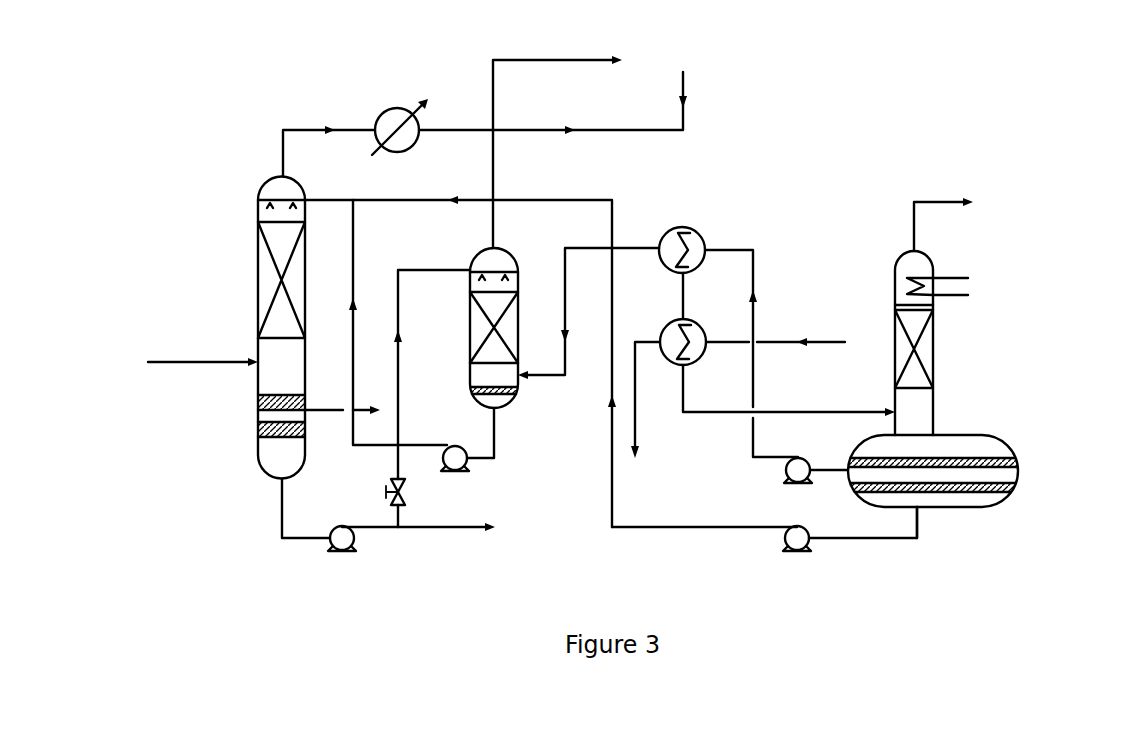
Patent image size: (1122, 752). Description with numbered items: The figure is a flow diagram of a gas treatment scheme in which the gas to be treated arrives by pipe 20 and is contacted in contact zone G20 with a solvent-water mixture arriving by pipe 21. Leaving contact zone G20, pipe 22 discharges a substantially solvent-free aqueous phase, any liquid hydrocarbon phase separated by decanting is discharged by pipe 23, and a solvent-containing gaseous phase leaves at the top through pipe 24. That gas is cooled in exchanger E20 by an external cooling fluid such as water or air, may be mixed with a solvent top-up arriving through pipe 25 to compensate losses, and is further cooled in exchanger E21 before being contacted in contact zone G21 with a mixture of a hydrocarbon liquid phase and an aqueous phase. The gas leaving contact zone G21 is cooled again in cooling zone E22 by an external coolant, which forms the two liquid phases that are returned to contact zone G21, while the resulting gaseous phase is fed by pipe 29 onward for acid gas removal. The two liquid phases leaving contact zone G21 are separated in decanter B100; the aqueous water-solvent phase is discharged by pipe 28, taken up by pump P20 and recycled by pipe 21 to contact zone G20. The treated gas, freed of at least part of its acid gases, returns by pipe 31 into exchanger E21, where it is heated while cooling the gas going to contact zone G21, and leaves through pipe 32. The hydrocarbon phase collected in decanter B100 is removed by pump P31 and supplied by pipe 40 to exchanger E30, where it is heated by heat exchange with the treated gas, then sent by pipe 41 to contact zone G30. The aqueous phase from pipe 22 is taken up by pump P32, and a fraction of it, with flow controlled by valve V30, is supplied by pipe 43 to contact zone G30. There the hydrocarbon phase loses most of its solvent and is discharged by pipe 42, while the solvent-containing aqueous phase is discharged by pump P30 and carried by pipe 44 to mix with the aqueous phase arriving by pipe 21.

The pipe 20 is at (200, 361).
The pipe 21 is at (398, 200).
The pipe 22 is at (282, 527).
The pipe 23 is at (328, 410).
The pipe 24 is at (302, 127).
The pipe 25 is at (688, 110).
The pipe 28 is at (942, 508).
The pipe 29 is at (945, 200).
The pipe 31 is at (787, 341).
The pipe 32 is at (638, 436).
The pipe 40 is at (757, 264).
The pipe 41 is at (575, 248).
The pipe 42 is at (545, 60).
The pipe 43 is at (428, 270).
The pipe 44 is at (353, 330).
The exchanger E20 is at (395, 108).
The exchanger E21 is at (676, 333).
The cooling zone E22 is at (895, 310).
The exchanger E30 is at (698, 240).
The contact zone G20 is at (258, 248).
The contact zone G21 is at (933, 342).
The contact zone G30 is at (470, 342).
The pump P20 is at (797, 552).
The pump P30 is at (455, 473).
The pump P31 is at (793, 485).
The pump P32 is at (342, 552).
The valve V30 is at (389, 486).
The decanter B100 is at (1020, 470).